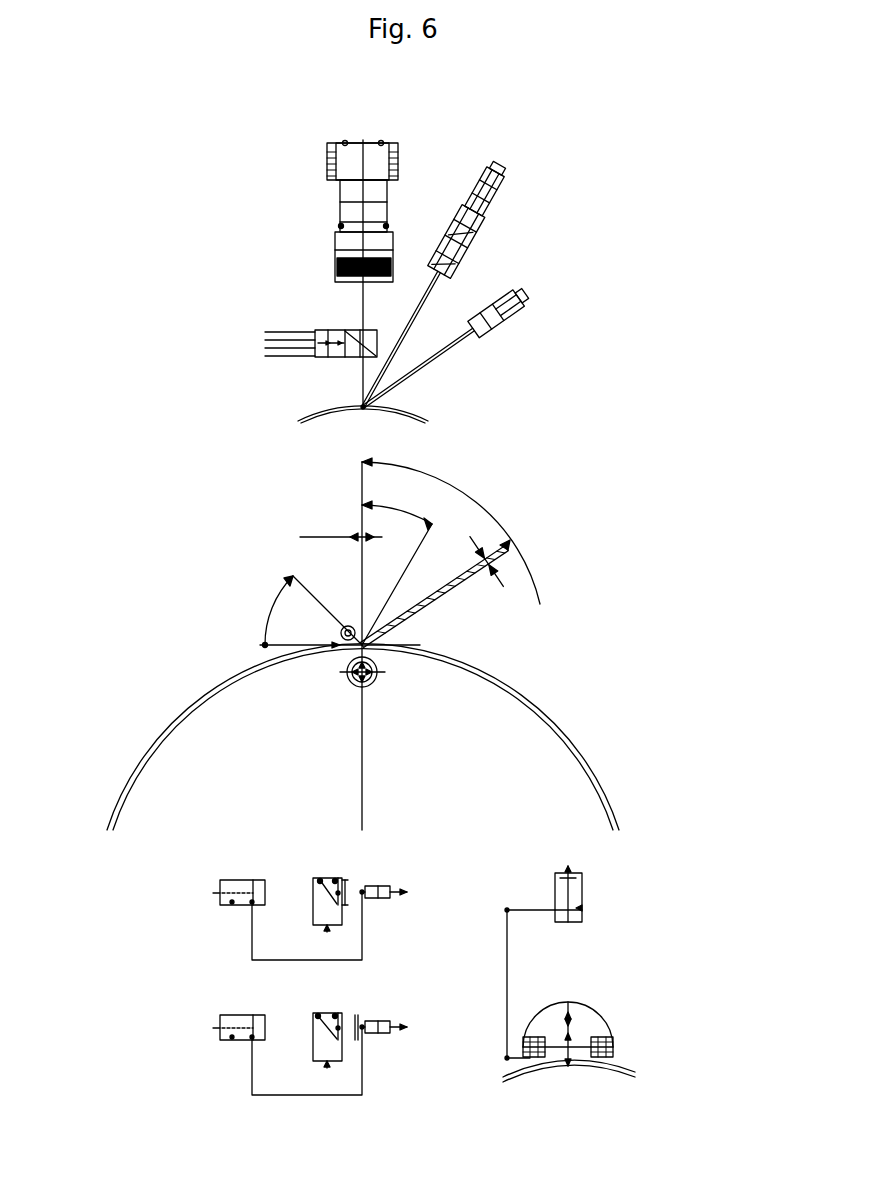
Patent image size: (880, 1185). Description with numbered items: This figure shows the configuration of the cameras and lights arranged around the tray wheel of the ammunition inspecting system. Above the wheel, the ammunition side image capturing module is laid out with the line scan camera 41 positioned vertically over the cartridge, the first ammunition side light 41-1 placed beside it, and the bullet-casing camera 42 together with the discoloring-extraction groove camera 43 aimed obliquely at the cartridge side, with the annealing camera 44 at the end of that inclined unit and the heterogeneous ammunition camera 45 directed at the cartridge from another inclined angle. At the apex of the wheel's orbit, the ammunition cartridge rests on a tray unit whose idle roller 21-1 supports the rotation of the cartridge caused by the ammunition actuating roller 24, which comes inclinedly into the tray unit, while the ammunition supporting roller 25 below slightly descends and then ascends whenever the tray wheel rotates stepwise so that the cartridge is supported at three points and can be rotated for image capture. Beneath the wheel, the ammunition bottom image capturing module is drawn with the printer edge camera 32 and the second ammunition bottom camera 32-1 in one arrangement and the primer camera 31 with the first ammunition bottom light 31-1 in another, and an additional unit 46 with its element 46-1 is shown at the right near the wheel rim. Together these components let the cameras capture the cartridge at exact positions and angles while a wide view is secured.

The line scan camera 41 is at (323, 162).
The first ammunition side light 41-1 is at (283, 318).
The bullet-casing camera 42 is at (500, 309).
The discoloring-extraction groove camera 43 is at (472, 243).
The annealing camera 44 is at (470, 188).
The heterogeneous ammunition camera 45 is at (505, 328).
The ammunition actuating roller 24 is at (345, 616).
The idle roller 21-1 is at (400, 637).
The ammunition supporting roller 25 is at (388, 683).
The printer edge camera 32 is at (237, 878).
The second ammunition bottom camera 32-1 is at (318, 878).
The primer camera 31 is at (237, 1018).
The first ammunition bottom light 31-1 is at (330, 1005).
The pressure unit 46 is at (597, 900).
The pressure shoe 46-1 is at (573, 997).